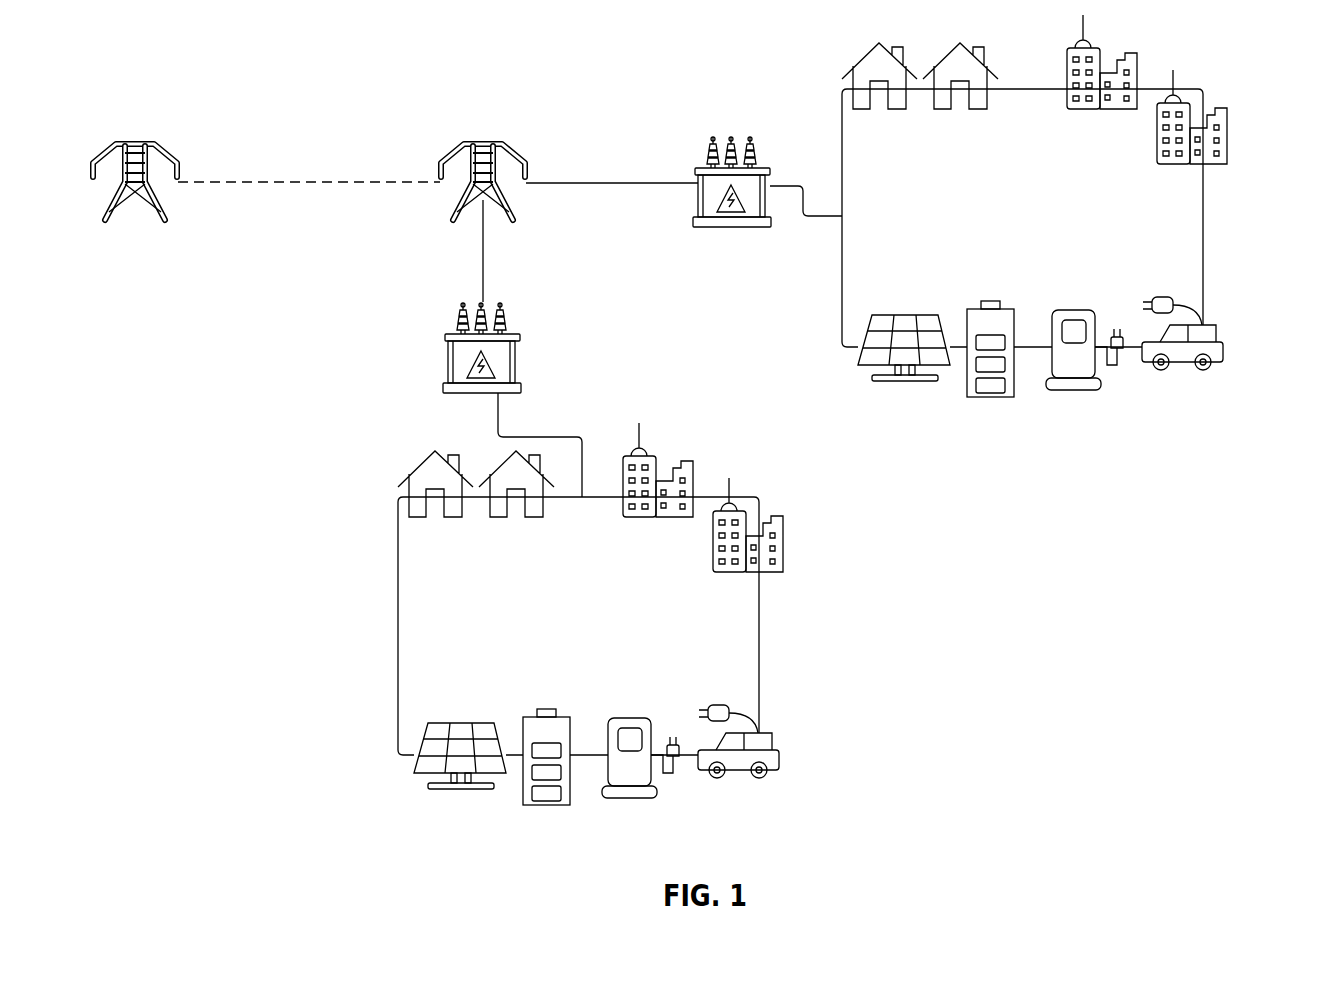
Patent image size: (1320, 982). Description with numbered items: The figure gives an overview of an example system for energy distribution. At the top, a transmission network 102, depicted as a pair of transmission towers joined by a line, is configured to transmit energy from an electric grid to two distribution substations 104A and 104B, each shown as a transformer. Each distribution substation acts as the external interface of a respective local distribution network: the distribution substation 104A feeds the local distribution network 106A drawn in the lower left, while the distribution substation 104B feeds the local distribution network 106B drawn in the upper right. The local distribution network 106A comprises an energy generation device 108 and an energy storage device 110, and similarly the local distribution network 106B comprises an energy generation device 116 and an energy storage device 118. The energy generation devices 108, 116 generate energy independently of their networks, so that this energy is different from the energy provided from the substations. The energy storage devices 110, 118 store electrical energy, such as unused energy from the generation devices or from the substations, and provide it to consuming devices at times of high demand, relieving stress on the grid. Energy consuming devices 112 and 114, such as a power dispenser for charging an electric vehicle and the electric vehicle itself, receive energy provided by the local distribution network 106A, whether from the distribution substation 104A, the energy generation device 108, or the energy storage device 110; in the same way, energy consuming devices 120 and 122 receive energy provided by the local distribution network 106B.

The transmission network 102 is at (525, 124).
The distribution substation 104A is at (448, 362).
The distribution substation 104B is at (733, 137).
The local distribution network 106A is at (397, 600).
The local distribution network 106B is at (1205, 228).
The energy generation device 108 is at (460, 791).
The energy storage device 110 is at (538, 793).
The energy consuming device 112 is at (634, 794).
The energy consuming device 114 is at (738, 774).
The energy generation device 116 is at (902, 383).
The energy storage device 118 is at (990, 399).
The energy consuming device 120 is at (1073, 392).
The energy consuming device 122 is at (1183, 365).